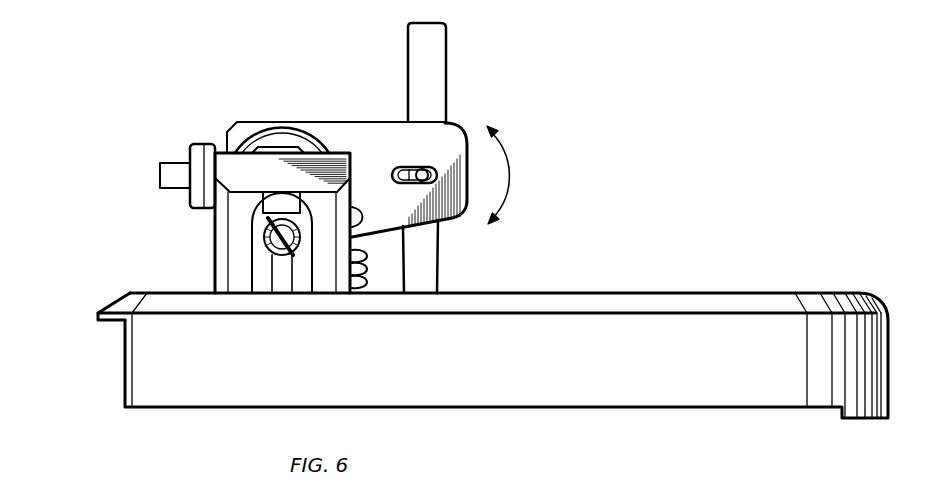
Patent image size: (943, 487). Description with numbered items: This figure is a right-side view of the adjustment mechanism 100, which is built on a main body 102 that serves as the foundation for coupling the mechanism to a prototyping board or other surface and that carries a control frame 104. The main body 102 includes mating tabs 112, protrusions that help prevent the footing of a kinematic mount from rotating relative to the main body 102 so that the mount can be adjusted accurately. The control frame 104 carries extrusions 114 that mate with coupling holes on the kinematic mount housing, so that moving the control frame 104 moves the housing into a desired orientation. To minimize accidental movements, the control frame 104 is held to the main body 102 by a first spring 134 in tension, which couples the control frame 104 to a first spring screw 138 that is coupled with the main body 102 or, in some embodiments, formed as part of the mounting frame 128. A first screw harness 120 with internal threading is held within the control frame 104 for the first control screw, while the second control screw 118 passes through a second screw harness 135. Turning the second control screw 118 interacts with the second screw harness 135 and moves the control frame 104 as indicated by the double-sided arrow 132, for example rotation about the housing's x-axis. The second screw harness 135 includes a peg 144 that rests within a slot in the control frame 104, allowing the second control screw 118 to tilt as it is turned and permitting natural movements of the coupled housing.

The adjustment mechanism 100 is at (479, 218).
The main body 102 is at (708, 308).
The control frame 104 is at (335, 137).
The mating tabs 112 is at (112, 305).
The extrusions 114 is at (167, 180).
The second control screw 118 is at (438, 43).
The first screw harness 120 is at (278, 150).
The mounting frame 128 is at (230, 170).
The double-sided arrow 132 is at (510, 177).
The first spring 134 is at (253, 245).
The second screw harness 135 is at (403, 167).
The first spring screw 138 is at (280, 275).
The peg 144 is at (423, 170).